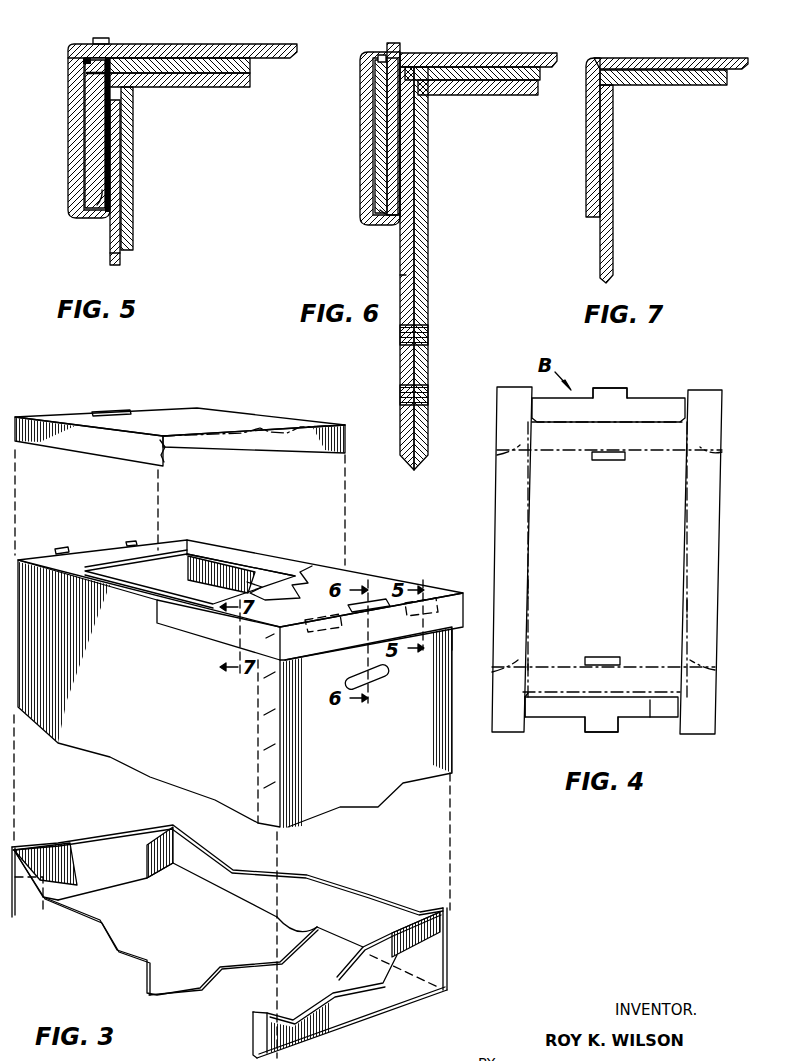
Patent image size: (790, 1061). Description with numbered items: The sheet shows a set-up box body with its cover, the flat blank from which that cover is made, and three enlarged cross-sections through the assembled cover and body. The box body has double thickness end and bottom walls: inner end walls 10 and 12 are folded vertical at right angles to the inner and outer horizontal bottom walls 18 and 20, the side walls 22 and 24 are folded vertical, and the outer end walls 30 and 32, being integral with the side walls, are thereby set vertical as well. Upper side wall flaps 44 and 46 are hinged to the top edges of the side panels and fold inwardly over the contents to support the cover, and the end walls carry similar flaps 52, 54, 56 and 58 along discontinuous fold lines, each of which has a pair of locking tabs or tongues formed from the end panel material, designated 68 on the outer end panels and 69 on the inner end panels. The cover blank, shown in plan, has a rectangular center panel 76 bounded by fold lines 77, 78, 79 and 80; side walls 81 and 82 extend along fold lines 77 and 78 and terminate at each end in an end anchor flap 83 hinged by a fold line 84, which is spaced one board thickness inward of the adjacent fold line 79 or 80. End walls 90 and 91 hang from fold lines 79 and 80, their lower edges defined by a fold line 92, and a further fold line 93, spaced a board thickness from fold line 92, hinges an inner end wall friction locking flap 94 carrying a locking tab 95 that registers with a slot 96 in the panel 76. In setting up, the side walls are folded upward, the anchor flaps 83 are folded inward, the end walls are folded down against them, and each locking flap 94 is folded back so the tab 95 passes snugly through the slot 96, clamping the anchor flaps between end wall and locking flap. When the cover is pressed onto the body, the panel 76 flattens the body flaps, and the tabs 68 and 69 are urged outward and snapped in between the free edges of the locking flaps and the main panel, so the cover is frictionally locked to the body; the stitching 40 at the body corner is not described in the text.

In FIG. 3, the inner end wall 10 is at (83, 885).
In FIG. 5, the inner end wall 12 is at (135, 196).
In FIG. 6, the inner end wall 12 is at (430, 180).
In FIG. 3, the inner end wall 12 is at (353, 980).
In FIG. 3, the inner horizontal bottom wall 18 is at (158, 927).
In FIG. 3, the outer horizontal bottom wall 20 is at (213, 1002).
In FIG. 3, the side wall 22 is at (328, 920).
In FIG. 7, the side wall 24 is at (613, 236).
In FIG. 3, the side wall 24 is at (128, 703).
In FIG. 3, the outer end wall 30 is at (130, 855).
In FIG. 5, the outer end wall 32 is at (108, 256).
In FIG. 6, the outer end wall 32 is at (400, 275).
In FIG. 3, the outer end wall 32 is at (363, 763).
In FIG. 3, the stitches 40 is at (262, 746).
In FIG. 3, the upper side wall flap 44 is at (248, 562).
In FIG. 7, the upper side wall flap 46 is at (700, 85).
In FIG. 3, the upper side wall flap 46 is at (136, 594).
In FIG. 3, the end wall flap 52 is at (145, 566).
In FIG. 5, the end wall flap 54 is at (215, 88).
In FIG. 6, the end wall flap 54 is at (490, 95).
In FIG. 3, the end wall flap 56 is at (105, 553).
In FIG. 5, the end wall flap 58 is at (255, 70).
In FIG. 6, the end wall flap 58 is at (545, 72).
In FIG. 5, the locking tab 68 is at (82, 61).
In FIG. 3, the locking tab 68 is at (57, 549).
In FIG. 5, the locking tab 69 is at (87, 76).
In FIG. 5, the center panel 76 is at (260, 44).
In FIG. 6, the center panel 76 is at (522, 54).
In FIG. 7, the center panel 76 is at (730, 58).
In FIG. 4, the center panel 76 is at (593, 555).
In FIG. 3, the center panel 76 is at (178, 433).
In FIG. 4, the fold line 77 is at (530, 588).
In FIG. 4, the fold line 78 is at (684, 604).
In FIG. 4, the fold line 79 is at (548, 667).
In FIG. 4, the fold line 80 is at (668, 452).
In FIG. 4, the side wall 81 is at (496, 533).
In FIG. 3, the side wall 81 is at (316, 445).
In FIG. 7, the side wall 82 is at (586, 169).
In FIG. 4, the side wall 82 is at (688, 533).
In FIG. 3, the side wall 82 is at (130, 462).
In FIG. 5, the end anchor flap 83 is at (84, 148).
In FIG. 6, the end anchor flap 83 is at (380, 153).
In FIG. 4, the end anchor flap 83 is at (500, 420).
In FIG. 4, the fold line 84 is at (498, 461).
In FIG. 3, the fold line 84 is at (452, 642).
In FIG. 5, the end wall 90 is at (68, 117).
In FIG. 6, the end wall 90 is at (360, 126).
In FIG. 4, the end wall 90 is at (566, 690).
In FIG. 3, the end wall 90 is at (305, 652).
In FIG. 4, the end wall 91 is at (556, 447).
In FIG. 4, the fold line 92 is at (622, 692).
In FIG. 4, the fold line 93 is at (655, 700).
In FIG. 5, the inner end wall friction locking flap 94 is at (98, 205).
In FIG. 6, the inner end wall friction locking flap 94 is at (388, 216).
In FIG. 4, the inner end wall friction locking flap 94 is at (572, 720).
In FIG. 5, the locking tab 95 is at (101, 38).
In FIG. 6, the locking tab 95 is at (398, 45).
In FIG. 4, the locking tab 95 is at (620, 388).
In FIG. 3, the locking tab 95 is at (113, 412).
In FIG. 6, the slot 96 is at (381, 55).
In FIG. 4, the slot 96 is at (605, 462).